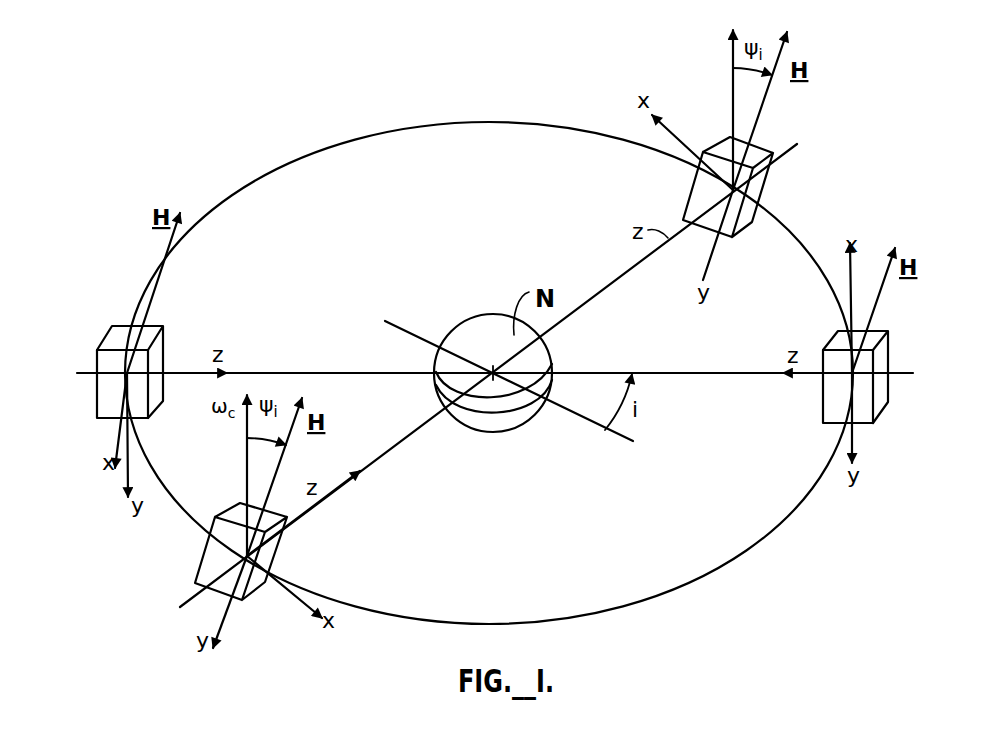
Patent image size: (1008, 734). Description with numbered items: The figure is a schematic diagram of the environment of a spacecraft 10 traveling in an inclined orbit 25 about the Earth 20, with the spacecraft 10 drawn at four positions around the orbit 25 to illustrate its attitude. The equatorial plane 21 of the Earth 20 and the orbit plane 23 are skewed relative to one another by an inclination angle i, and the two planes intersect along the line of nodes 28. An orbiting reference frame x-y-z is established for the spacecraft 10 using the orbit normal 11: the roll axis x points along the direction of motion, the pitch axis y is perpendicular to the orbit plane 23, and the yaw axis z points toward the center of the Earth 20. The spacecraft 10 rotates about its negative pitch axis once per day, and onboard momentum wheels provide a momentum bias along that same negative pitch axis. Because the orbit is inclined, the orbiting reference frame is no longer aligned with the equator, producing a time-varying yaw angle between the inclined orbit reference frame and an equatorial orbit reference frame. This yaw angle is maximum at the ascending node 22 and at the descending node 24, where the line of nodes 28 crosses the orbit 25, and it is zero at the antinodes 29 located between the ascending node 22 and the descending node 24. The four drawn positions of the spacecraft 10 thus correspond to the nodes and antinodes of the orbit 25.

The spacecraft 10 is at (164, 332).
The orbit normal 11 is at (678, 226).
The Earth 20 is at (467, 320).
The equatorial plane 21 is at (523, 418).
The ascending node 22 is at (233, 558).
The orbit plane 23 is at (548, 356).
The descending node 24 is at (748, 186).
The inclined orbit 25 is at (684, 585).
The line of nodes 28 is at (412, 439).
The antinodes 29 is at (122, 376).